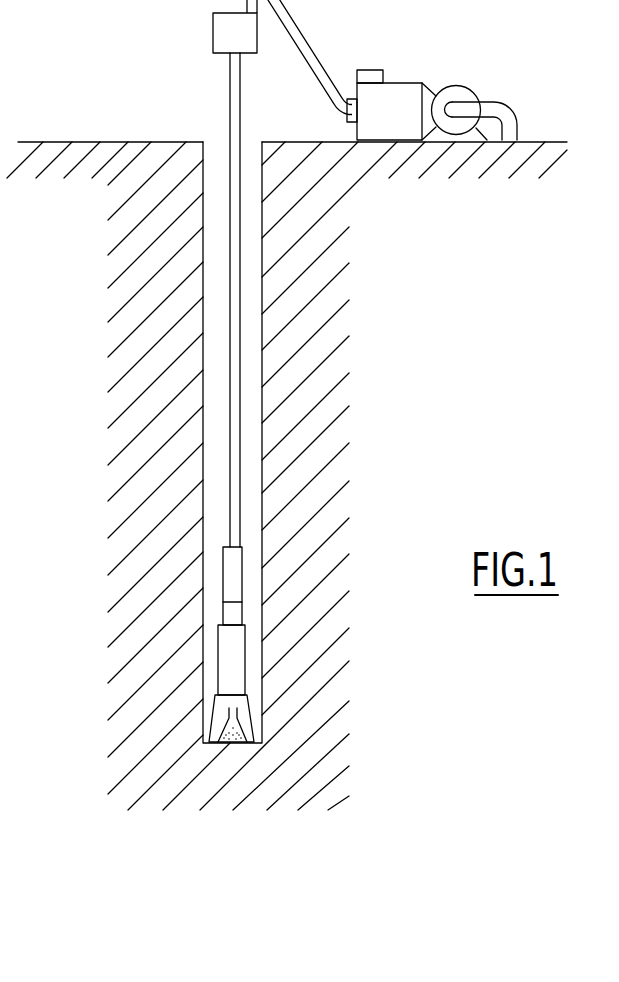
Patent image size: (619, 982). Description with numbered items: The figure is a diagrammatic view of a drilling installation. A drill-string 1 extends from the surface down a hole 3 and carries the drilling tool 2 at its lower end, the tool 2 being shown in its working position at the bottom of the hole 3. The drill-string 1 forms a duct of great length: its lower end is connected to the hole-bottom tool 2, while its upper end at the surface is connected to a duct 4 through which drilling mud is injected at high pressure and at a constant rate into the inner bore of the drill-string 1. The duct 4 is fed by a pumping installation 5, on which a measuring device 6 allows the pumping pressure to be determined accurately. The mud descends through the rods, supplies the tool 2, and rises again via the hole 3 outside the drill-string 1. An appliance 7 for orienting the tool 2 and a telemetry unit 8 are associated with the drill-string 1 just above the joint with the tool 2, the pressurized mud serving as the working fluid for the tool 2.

The drill-string 1 is at (236, 100).
The drilling tool 2 is at (242, 717).
The hole 3 is at (263, 474).
The duct 4 is at (310, 52).
The pumping installation 5 is at (402, 92).
The measuring device 6 is at (369, 71).
The appliance 7 is at (237, 610).
The telemetry unit 8 is at (235, 662).